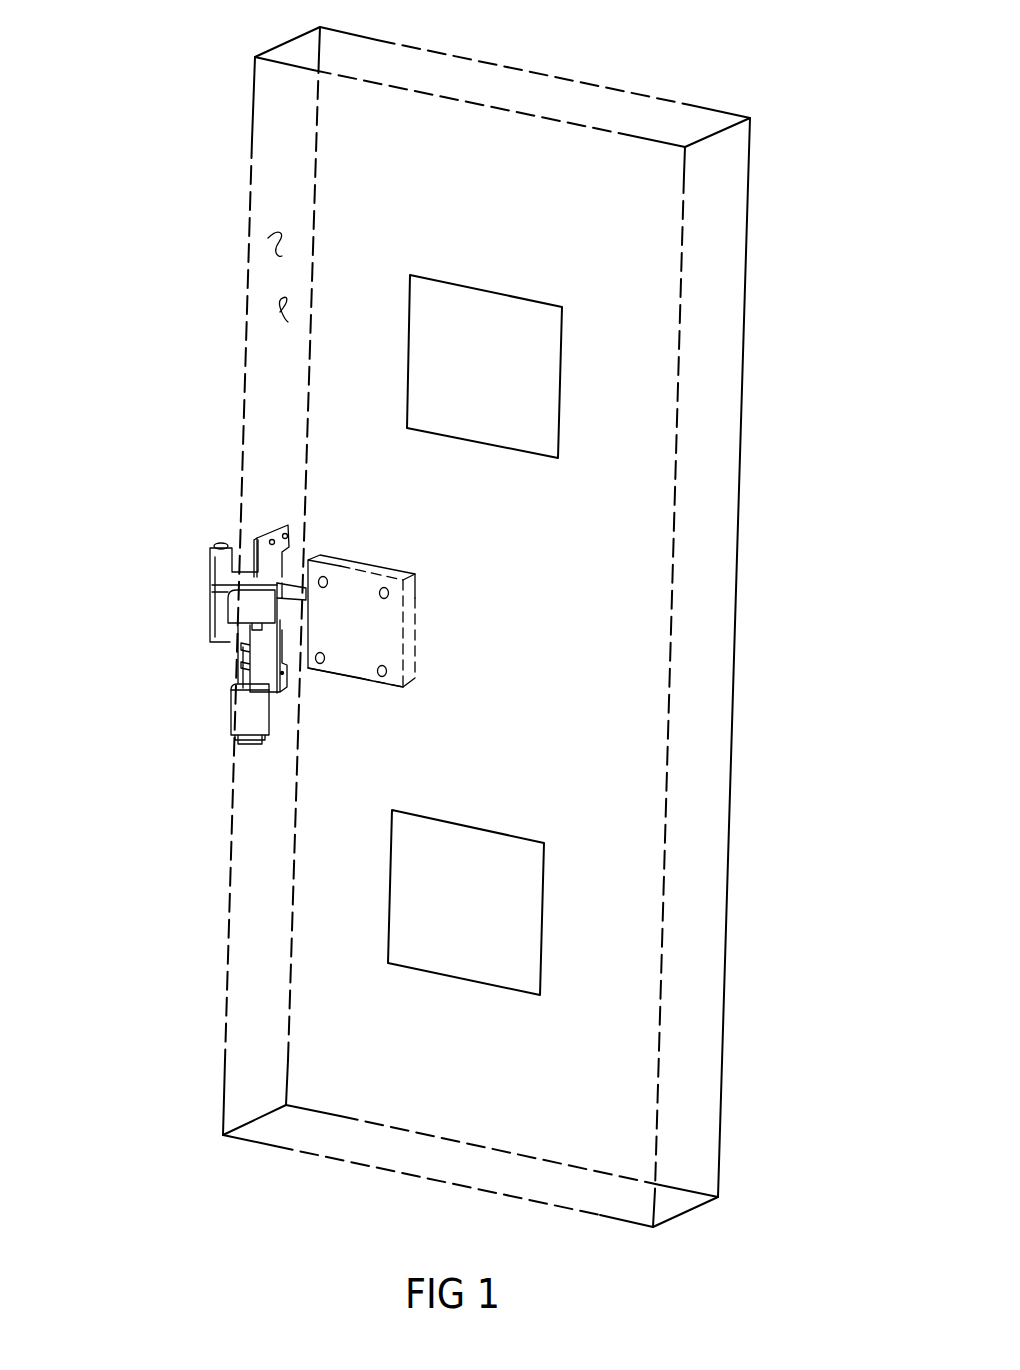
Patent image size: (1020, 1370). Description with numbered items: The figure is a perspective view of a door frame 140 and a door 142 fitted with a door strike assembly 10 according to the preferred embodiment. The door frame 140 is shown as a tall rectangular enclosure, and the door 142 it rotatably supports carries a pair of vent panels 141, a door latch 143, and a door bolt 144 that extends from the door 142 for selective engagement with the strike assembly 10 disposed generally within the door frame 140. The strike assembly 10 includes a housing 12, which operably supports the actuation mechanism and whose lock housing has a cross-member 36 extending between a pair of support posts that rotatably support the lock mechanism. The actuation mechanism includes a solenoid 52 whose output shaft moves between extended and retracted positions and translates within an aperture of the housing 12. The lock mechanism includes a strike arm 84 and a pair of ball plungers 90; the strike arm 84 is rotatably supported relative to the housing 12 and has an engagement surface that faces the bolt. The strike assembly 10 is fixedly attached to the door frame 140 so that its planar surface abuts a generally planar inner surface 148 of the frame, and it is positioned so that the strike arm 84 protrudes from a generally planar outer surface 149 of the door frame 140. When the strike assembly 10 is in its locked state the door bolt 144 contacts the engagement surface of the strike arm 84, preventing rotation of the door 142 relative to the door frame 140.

The door strike assembly 10 is at (170, 613).
The housing 12 is at (263, 533).
The cross-member 36 is at (207, 632).
The solenoid 52 is at (242, 750).
The strike arm 84 is at (253, 605).
The ball plungers 90 is at (223, 543).
The door frame 140 is at (725, 148).
The vent panels 141 is at (528, 359).
The door 142 is at (593, 150).
The door latch 143 is at (415, 628).
The door bolt 144 is at (292, 592).
The inner surface 148 is at (268, 239).
The outer surface 149 is at (282, 311).